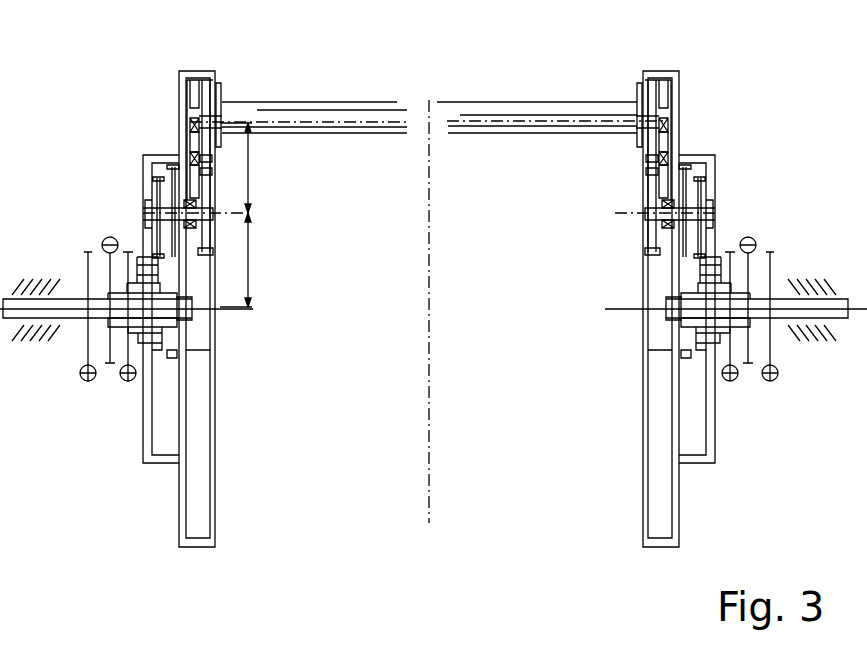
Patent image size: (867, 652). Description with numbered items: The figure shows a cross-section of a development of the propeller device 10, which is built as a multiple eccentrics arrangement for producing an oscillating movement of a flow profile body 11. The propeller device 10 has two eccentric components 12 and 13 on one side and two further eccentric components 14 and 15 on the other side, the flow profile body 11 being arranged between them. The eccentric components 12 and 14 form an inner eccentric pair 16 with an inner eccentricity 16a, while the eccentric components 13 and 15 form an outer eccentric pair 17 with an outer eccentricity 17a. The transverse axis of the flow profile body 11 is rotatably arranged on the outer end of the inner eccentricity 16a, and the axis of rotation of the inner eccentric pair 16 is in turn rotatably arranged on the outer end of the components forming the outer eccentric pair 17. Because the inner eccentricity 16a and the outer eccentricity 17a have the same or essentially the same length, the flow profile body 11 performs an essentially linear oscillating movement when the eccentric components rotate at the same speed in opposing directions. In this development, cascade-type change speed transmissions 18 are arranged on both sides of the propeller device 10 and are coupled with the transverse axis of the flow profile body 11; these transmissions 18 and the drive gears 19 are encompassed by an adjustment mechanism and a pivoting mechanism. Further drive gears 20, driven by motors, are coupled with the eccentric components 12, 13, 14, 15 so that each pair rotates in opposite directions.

The propeller device 10 is at (317, 72).
The flow profile body 11 is at (340, 110).
The eccentric component 12 is at (195, 97).
The eccentric component 13 is at (147, 242).
The further eccentric component 14 is at (663, 97).
The further eccentric component 15 is at (710, 243).
The inner eccentric pair 16 is at (660, 331).
The inner eccentricity 16a is at (248, 170).
The outer eccentric pair 17 is at (670, 386).
The outer eccentricity 17a is at (248, 260).
The cascade-type change speed transmissions 18 is at (158, 202).
The drive gears 19 is at (130, 381).
The further drive gears 20 is at (108, 237).